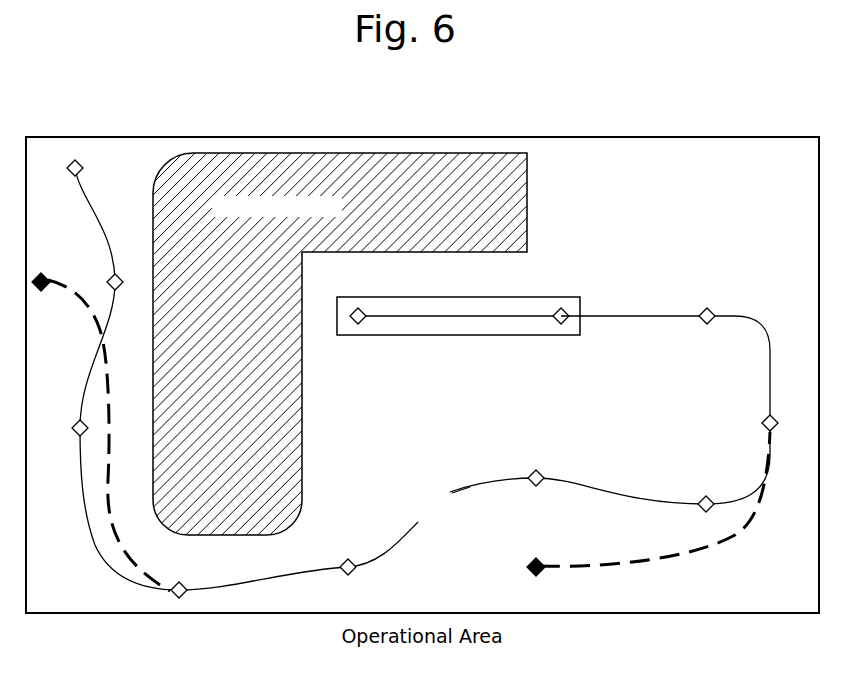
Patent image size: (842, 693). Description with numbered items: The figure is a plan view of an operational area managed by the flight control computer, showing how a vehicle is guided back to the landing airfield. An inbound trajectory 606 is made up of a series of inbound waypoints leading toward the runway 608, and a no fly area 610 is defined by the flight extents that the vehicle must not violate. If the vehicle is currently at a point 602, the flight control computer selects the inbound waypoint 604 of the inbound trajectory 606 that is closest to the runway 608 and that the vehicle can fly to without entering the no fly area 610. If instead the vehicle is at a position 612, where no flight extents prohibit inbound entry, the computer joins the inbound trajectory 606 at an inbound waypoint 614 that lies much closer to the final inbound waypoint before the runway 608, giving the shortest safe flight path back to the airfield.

The point 602 is at (45, 290).
The inbound waypoint 604 is at (178, 583).
The inbound trajectory 606 is at (740, 316).
The runway 608 is at (531, 307).
The no fly area 610 is at (380, 170).
The position 612 is at (528, 569).
The inbound waypoint 614 is at (764, 425).